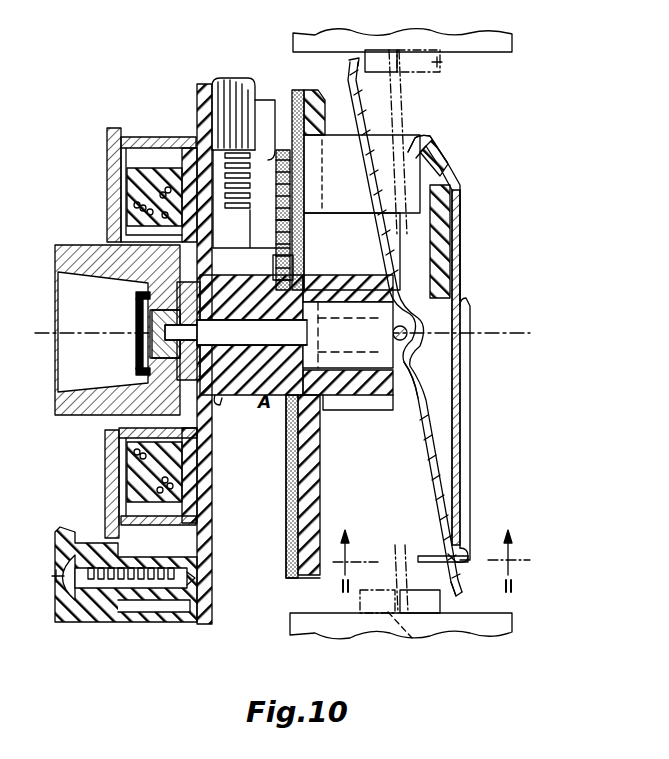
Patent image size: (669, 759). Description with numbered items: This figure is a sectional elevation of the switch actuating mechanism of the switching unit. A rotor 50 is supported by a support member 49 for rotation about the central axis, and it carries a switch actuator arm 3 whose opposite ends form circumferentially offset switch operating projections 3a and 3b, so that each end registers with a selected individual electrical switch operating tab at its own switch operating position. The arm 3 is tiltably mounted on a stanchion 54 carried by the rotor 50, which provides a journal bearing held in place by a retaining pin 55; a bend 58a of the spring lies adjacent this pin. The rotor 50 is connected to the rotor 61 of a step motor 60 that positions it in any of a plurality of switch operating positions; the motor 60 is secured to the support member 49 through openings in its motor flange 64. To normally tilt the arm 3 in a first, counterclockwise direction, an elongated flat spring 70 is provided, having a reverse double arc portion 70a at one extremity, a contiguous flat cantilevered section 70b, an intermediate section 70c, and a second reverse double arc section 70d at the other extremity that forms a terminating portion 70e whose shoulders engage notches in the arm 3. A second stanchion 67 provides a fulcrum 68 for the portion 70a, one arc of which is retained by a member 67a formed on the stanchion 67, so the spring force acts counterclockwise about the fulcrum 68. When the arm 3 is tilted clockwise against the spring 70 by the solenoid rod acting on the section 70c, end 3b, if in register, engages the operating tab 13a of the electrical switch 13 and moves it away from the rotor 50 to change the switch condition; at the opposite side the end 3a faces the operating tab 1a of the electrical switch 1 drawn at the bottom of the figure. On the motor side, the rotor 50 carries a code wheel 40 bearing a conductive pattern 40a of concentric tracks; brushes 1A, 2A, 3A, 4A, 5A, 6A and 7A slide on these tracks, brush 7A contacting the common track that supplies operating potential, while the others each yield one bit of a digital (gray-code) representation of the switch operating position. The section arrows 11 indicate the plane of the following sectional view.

The lower plate 1 is at (330, 636).
The lower plate projection 1a is at (400, 636).
The brush 1A is at (274, 148).
The brush 2A is at (300, 170).
The switch actuator arm 3 is at (430, 420).
The switch operating projection 3a is at (458, 590).
The switch operating projection 3b is at (349, 64).
The brush 3A is at (278, 200).
The brush 4A is at (306, 200).
The brush 5A is at (278, 230).
The brush 6A is at (306, 240).
The brush 7A is at (306, 262).
The section line 11 is at (436, 552).
The electrical switch 13 is at (512, 42).
The operating tab 13a is at (395, 70).
The code wheel 40 is at (287, 562).
The conductive pattern 40a is at (287, 504).
The support member 49 is at (213, 458).
The rotor 50 is at (320, 462).
The stanchion 54 is at (378, 372).
The retaining pin 55 is at (418, 322).
The spring bend 58a is at (404, 372).
The step motor 60 is at (105, 484).
The rotor of step motor 61 is at (82, 415).
The motor flange 64 is at (112, 128).
The stanchion 67 is at (320, 152).
The member 67a is at (448, 152).
The fulcrum 68 is at (452, 204).
The spring 70 is at (462, 302).
The reverse double arc portion 70a is at (460, 180).
The flat cantilevered section 70b is at (462, 248).
The intermediate section 70c is at (470, 356).
The second reverse double arc section 70d is at (468, 552).
The terminating portion 70e is at (430, 555).